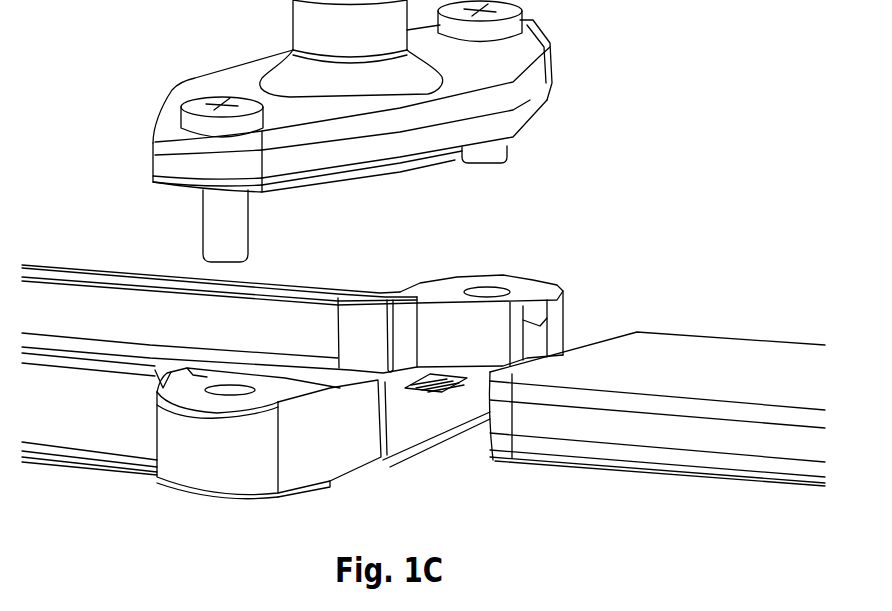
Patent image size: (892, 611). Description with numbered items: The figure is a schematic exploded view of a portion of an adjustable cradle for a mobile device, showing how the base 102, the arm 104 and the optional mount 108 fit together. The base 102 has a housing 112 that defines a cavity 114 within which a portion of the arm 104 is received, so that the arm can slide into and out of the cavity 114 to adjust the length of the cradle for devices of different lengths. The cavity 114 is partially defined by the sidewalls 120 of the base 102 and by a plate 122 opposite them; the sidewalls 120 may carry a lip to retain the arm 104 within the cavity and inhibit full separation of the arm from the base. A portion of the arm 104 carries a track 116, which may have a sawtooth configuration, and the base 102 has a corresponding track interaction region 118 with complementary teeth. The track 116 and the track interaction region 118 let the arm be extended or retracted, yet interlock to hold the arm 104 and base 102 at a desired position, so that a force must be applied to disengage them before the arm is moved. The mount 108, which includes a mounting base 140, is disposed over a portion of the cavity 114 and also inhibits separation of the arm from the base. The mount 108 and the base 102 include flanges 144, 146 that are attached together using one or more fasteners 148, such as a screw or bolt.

The base 102 is at (80, 440).
The arm 104 is at (767, 350).
The mount 108 is at (537, 103).
The housing 112 is at (147, 440).
The cavity 114 is at (88, 334).
The track 116 is at (657, 470).
The track interaction region 118 is at (427, 380).
The sidewalls 120 is at (280, 317).
The plate 122 is at (420, 417).
The mounting base 140 is at (213, 72).
The flange 144 is at (540, 283).
The flange 146 is at (163, 138).
The fastener 148 is at (203, 237).